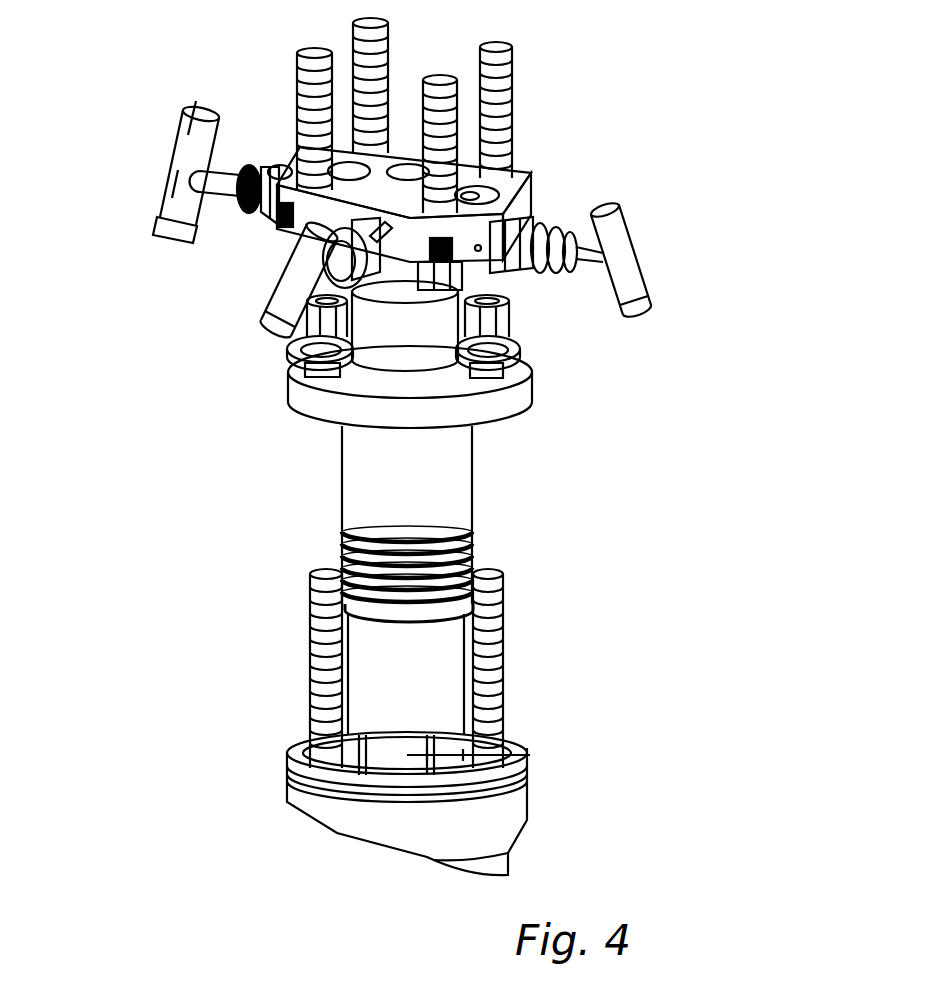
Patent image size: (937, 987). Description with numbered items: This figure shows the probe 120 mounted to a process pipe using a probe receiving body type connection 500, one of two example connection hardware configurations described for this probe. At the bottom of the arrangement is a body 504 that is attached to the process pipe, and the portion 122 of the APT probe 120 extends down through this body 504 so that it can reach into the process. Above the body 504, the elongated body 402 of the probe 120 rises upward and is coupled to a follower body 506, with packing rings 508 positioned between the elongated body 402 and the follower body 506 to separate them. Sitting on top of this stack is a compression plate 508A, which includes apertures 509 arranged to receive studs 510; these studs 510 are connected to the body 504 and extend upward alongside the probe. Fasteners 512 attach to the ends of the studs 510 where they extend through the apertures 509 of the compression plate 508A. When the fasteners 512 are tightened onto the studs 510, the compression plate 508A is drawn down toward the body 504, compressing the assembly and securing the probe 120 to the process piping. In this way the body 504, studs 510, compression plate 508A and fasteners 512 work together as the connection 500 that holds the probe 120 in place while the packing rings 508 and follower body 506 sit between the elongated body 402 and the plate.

The probe receiving body type connection 500 is at (112, 515).
The compression plate 508A is at (287, 388).
The fasteners 512 is at (500, 318).
The apertures 509 is at (490, 378).
The follower body 506 is at (462, 452).
The packing rings 508 is at (335, 551).
The studs 510 is at (305, 609).
The APT probe 120 is at (596, 661).
The elongated body 402 is at (440, 668).
The portion of APT probe 122 is at (472, 748).
The body 504 is at (517, 800).